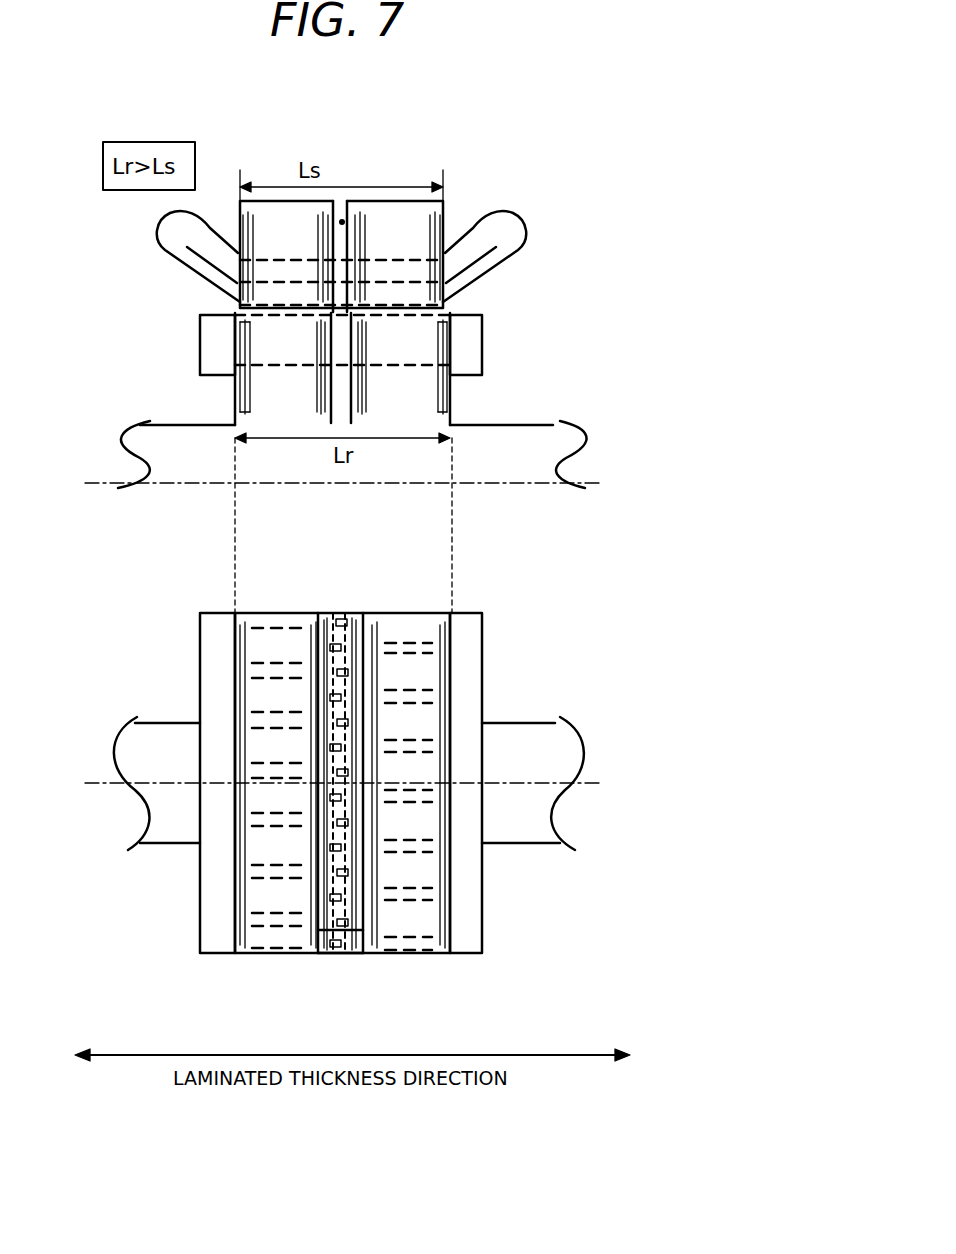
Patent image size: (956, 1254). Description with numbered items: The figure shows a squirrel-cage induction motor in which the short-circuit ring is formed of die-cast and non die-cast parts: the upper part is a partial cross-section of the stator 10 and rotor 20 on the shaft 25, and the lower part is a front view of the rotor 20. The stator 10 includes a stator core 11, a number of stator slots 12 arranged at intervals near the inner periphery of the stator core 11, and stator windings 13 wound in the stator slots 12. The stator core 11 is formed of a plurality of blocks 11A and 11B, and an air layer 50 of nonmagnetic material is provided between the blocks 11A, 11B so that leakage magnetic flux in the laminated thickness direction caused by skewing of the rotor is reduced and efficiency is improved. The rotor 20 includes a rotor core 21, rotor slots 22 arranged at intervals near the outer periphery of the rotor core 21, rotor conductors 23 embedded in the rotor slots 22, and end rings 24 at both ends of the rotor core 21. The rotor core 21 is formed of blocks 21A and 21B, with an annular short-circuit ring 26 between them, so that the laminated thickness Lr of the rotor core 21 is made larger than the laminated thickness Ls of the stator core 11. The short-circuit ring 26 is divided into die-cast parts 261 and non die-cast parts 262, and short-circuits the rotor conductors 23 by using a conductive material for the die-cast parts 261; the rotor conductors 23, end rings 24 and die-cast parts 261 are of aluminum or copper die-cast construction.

The stator 10 is at (408, 200).
The stator core 11 is at (378, 228).
The stator core block 11A is at (268, 247).
The stator core block 11B is at (413, 240).
The stator slots 12 is at (308, 257).
The stator windings 13 is at (508, 228).
The air layer 50 is at (342, 222).
The rotor 20 is at (157, 424).
The rotor core 21 is at (272, 403).
The rotor core block 21A is at (260, 390).
The rotor core block 21B is at (388, 393).
The rotor slots 22 is at (287, 367).
The rotor conductors 23 is at (405, 343).
The end rings 24 is at (210, 340).
The shaft 25 is at (167, 473).
The short-circuit ring 26 is at (367, 1025).
The die-cast parts 261 is at (345, 953).
The non die-cast parts 262 is at (345, 625).